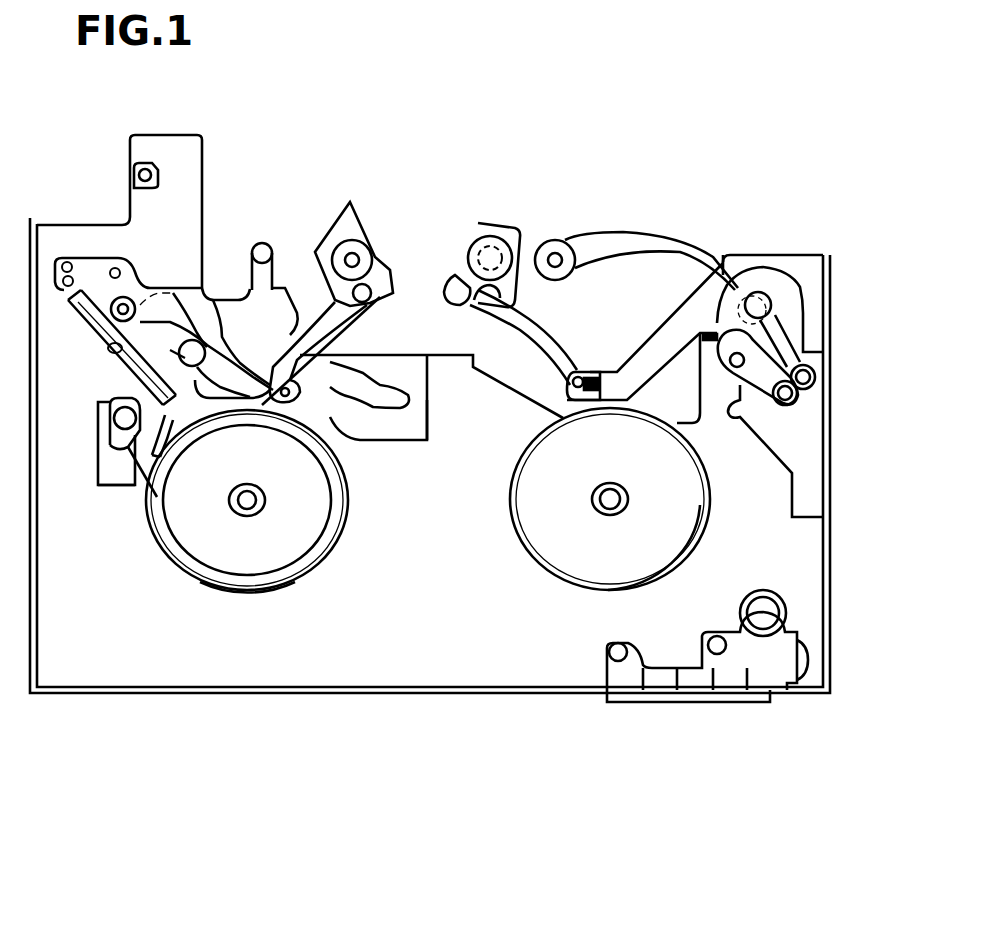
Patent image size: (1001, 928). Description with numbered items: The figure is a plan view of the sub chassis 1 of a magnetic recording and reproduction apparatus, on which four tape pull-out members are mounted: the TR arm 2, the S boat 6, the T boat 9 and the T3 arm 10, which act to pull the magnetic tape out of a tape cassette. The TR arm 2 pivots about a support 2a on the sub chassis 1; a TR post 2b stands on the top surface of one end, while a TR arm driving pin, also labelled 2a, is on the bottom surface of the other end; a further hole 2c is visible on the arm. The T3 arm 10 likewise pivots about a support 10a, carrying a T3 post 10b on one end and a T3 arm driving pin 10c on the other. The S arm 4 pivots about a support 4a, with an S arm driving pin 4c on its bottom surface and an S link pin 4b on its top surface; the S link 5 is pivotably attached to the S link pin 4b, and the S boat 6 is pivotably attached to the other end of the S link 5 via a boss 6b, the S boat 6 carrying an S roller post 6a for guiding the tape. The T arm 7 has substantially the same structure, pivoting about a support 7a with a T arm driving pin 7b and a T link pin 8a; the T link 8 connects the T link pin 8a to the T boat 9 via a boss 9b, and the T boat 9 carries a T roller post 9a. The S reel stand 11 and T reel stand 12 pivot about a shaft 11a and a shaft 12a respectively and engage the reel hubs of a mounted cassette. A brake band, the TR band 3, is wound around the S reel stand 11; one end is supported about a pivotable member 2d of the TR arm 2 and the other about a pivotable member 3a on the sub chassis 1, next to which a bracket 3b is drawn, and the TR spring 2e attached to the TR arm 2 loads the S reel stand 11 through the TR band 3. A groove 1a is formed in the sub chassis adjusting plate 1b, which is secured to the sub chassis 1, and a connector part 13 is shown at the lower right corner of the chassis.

The sub chassis 1 is at (422, 628).
The groove 1a is at (382, 398).
The sub chassis adjusting plate 1b is at (413, 428).
The TR arm 2 is at (205, 305).
The support 2a is at (113, 270).
The TR post 2b is at (264, 243).
The lever hole 2c is at (65, 263).
The pivotable member 2d is at (121, 300).
The TR spring 2e is at (90, 317).
The brake band (TR band) 3 is at (285, 590).
The pivotable member 3a is at (125, 430).
The bracket 3b is at (113, 475).
The S arm 4 is at (190, 355).
The support 4a is at (180, 360).
The S link pin 4b is at (293, 373).
The S arm driving pin 4c is at (110, 352).
The S link 5 is at (300, 345).
The S boat 6 is at (355, 230).
The S roller post 6a is at (367, 266).
The boss 6b is at (370, 288).
The T arm 7 is at (668, 355).
The support 7a is at (757, 312).
The T arm driving pin 7b is at (810, 383).
The T link 8 is at (538, 333).
The T link pin 8a is at (587, 373).
The T boat 9 is at (500, 250).
The T roller post 9a is at (487, 240).
The boss 9b is at (488, 298).
The T3 arm 10 is at (630, 247).
The support 10a is at (738, 368).
The T3 post 10b is at (558, 252).
The T3 arm driving pin 10c is at (792, 400).
The S reel stand 11 is at (248, 516).
The shaft 11a is at (220, 585).
The T reel stand 12 is at (555, 575).
The shaft 12a is at (610, 512).
The connector 13 is at (708, 685).